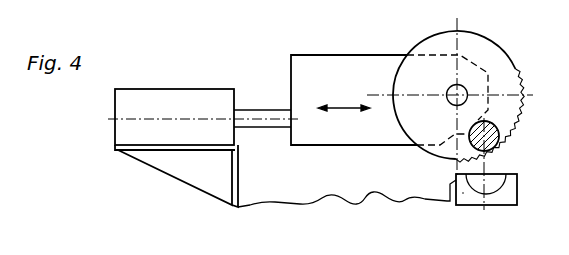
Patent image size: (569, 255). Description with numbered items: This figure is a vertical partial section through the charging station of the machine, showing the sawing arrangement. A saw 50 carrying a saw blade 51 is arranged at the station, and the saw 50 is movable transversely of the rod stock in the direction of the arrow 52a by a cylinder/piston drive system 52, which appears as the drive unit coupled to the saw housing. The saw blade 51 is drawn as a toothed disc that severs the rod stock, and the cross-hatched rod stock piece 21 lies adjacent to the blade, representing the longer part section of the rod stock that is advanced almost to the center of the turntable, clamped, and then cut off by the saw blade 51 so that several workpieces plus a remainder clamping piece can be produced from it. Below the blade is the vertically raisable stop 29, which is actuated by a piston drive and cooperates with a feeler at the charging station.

The saw 50 is at (333, 65).
The saw blade 51 is at (497, 53).
The cylinder/piston drive system 52 is at (188, 97).
The arrow 52a is at (344, 118).
The part section of the rod stock 21 is at (500, 143).
The vertically raisable stop 29 is at (508, 192).